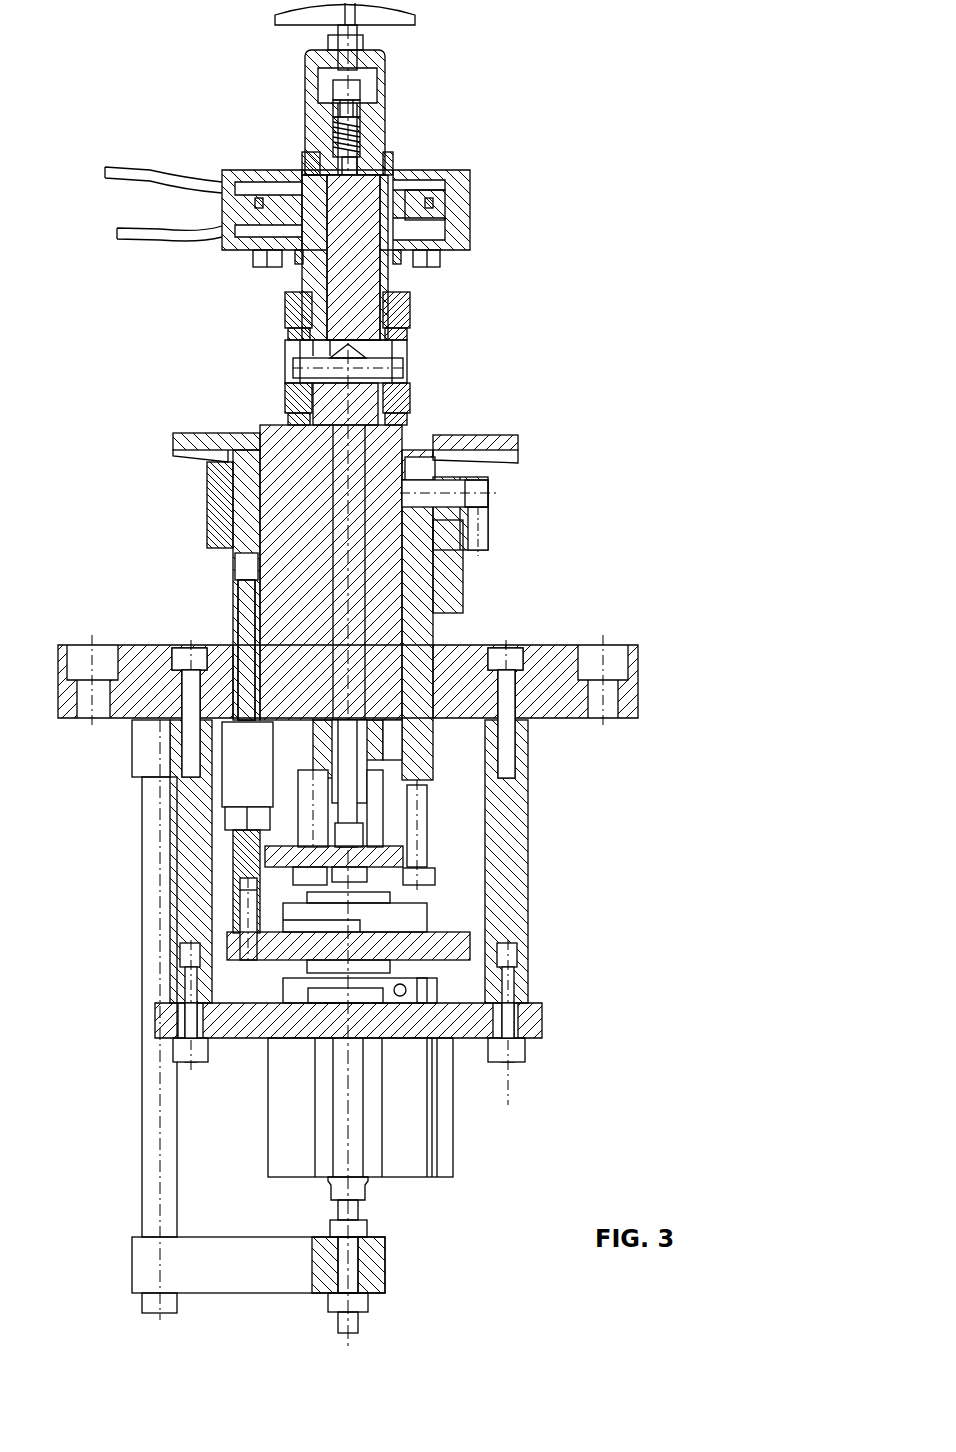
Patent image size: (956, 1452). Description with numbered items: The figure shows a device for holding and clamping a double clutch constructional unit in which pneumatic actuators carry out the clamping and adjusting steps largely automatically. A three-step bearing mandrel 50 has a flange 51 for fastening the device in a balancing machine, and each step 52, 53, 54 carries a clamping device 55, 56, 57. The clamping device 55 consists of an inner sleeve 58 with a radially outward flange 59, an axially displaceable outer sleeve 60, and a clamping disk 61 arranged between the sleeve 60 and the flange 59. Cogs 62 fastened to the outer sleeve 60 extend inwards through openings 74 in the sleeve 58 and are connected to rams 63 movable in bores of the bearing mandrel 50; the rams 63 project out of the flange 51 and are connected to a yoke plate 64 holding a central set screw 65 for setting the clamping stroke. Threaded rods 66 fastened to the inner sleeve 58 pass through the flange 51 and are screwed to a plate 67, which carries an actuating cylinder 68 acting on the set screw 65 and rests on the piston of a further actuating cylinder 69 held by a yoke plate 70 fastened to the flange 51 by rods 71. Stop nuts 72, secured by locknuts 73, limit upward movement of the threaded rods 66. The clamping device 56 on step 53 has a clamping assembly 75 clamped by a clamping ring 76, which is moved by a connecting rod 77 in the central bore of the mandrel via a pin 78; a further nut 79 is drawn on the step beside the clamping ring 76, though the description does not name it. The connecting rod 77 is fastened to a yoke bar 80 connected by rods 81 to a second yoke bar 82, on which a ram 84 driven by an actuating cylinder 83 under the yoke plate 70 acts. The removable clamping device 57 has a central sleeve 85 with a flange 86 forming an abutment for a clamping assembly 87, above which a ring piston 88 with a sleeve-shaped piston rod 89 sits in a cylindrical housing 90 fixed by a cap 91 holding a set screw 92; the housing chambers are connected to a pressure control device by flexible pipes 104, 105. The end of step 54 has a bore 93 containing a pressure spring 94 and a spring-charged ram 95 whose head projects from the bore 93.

The bearing mandrel 50 is at (258, 428).
The flange 51 is at (640, 688).
The step 52 is at (233, 520).
The step 53 is at (290, 400).
The step 54 is at (400, 310).
The clamping device 55 is at (205, 495).
The clamping device 56 is at (307, 382).
The clamping device 57 is at (317, 171).
The inner sleeve 58 is at (465, 580).
The flange 59 is at (506, 450).
The outer sleeve 60 is at (490, 540).
The clamping disk 61 is at (500, 460).
The cogs 62 is at (490, 495).
The rams 63 is at (506, 648).
The yoke plate 64 is at (422, 867).
The set screw 65 is at (350, 840).
The threaded rods 66 is at (192, 648).
The plate 67 is at (470, 948).
The actuating cylinder 68 is at (430, 915).
The actuating cylinder 69 is at (185, 1000).
The yoke plate 70 is at (470, 1040).
The rods 71 is at (175, 860).
The stop nuts 72 is at (222, 790).
The locknuts 73 is at (233, 885).
The openings 74 is at (420, 470).
The clamping assembly 75 is at (339, 365).
The clamping ring 76 is at (400, 333).
The connecting rod 77 is at (245, 565).
The pin 78 is at (403, 368).
The nut 79 is at (400, 395).
The yoke bar 80 is at (132, 745).
The rods 81 is at (145, 1080).
The yoke bar 82 is at (215, 1240).
The actuating cylinder 83 is at (453, 1160).
The ram 84 is at (360, 1210).
The central sleeve 85 is at (318, 268).
The flange 86 is at (293, 333).
The clamping assembly 87 is at (295, 310).
The ring piston 88 is at (415, 190).
The piston rod 89 is at (392, 280).
The cylindrical housing 90 is at (470, 197).
The cap 91 is at (385, 72).
The set screw 92 is at (360, 30).
The bore 93 is at (360, 108).
The pressure spring 94 is at (345, 140).
The ram 95 is at (333, 88).
The flexible pipes 104 is at (150, 165).
The flexible pipes 105 is at (145, 225).